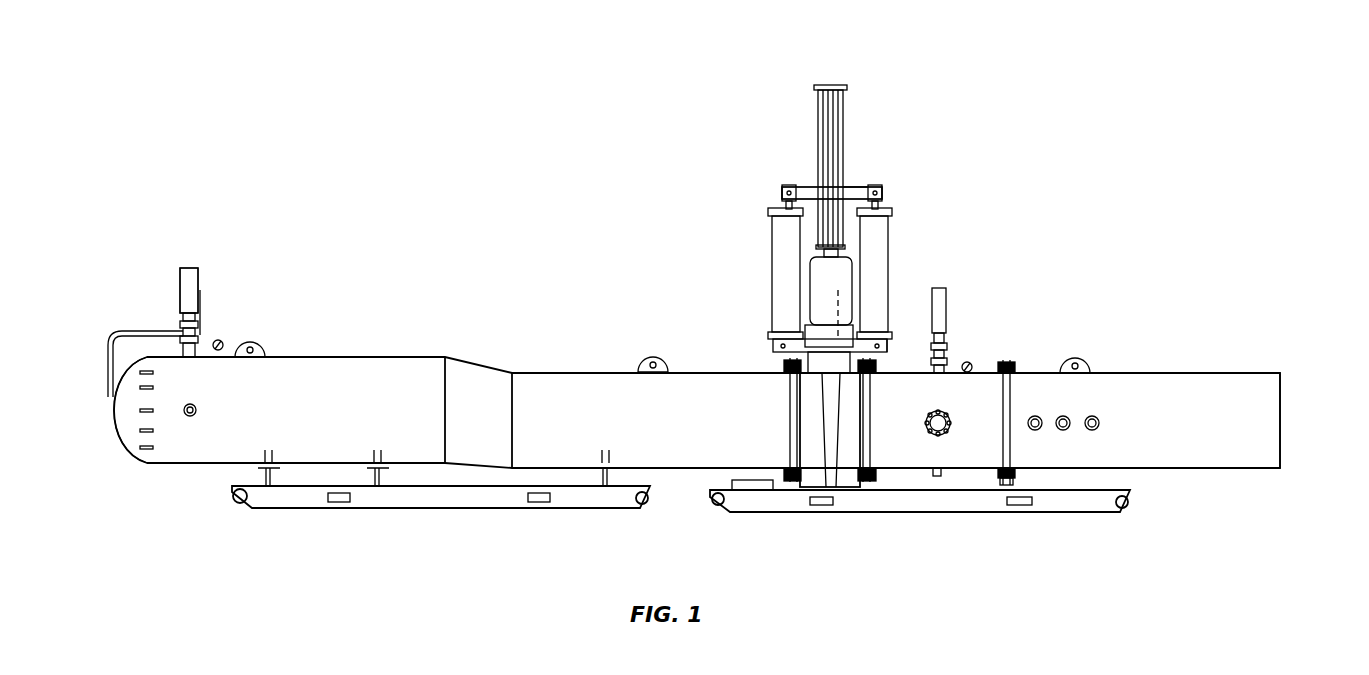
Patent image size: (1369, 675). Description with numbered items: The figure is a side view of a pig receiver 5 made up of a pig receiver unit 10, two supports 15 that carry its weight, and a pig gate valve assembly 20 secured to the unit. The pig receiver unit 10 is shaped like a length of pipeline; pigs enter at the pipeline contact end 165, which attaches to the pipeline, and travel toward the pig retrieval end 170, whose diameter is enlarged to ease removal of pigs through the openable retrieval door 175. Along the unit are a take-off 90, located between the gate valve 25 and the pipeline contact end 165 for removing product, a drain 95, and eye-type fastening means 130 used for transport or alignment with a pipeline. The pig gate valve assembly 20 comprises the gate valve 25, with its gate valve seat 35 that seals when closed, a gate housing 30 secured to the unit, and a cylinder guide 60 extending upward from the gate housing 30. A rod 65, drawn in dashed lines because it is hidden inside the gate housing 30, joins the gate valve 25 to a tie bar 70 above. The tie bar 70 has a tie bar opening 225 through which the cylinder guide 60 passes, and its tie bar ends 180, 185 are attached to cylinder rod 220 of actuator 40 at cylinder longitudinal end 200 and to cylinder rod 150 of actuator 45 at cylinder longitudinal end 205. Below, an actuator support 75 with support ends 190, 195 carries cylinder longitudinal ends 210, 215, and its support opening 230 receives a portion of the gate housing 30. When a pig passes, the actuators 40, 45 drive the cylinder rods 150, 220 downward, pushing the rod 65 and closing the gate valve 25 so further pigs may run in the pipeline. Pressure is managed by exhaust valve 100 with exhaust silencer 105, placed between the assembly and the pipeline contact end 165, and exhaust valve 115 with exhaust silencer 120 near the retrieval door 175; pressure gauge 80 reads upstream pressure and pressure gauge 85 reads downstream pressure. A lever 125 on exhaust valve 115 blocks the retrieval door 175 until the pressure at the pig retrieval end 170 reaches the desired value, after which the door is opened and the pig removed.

The pig receiver 5 is at (1182, 258).
The pig receiver unit 10 is at (533, 372).
The support 15 is at (430, 510).
The pig gate valve assembly 20 is at (758, 170).
The gate valve 25 is at (822, 467).
The gate housing 30 is at (812, 272).
The gate valve seat 35 is at (838, 465).
The actuator 40 is at (772, 242).
The actuator 45 is at (888, 240).
The cylinder guide 60 is at (836, 88).
The rod 65 is at (838, 300).
The tie bar 70 is at (876, 188).
The actuator support 75 is at (805, 338).
The pressure gauge 80 is at (970, 361).
The pressure gauge 85 is at (222, 340).
The take-off 90 is at (946, 436).
The drain 95 is at (937, 478).
The exhaust valve 100 is at (962, 298).
The exhaust silencer 105 is at (950, 325).
The exhaust valve 115 is at (150, 242).
The exhaust silencer 120 is at (200, 270).
The lever 125 is at (120, 334).
The fastening means 130 is at (252, 345).
The cylinder rod 150 is at (860, 188).
The pipeline contact end 165 is at (1283, 447).
The pig retrieval end 170 is at (190, 466).
The retrieval door 175 is at (118, 437).
The tie bar end 180 is at (803, 187).
The tie bar end 185 is at (880, 203).
The support end 190 is at (775, 350).
The support end 195 is at (892, 345).
The cylinder longitudinal end 200 is at (772, 211).
The cylinder longitudinal end 205 is at (884, 210).
The cylinder longitudinal end 210 is at (776, 332).
The cylinder longitudinal end 215 is at (876, 332).
The cylinder rod 220 is at (782, 197).
The tie bar opening 225 is at (818, 187).
The support opening 230 is at (788, 378).